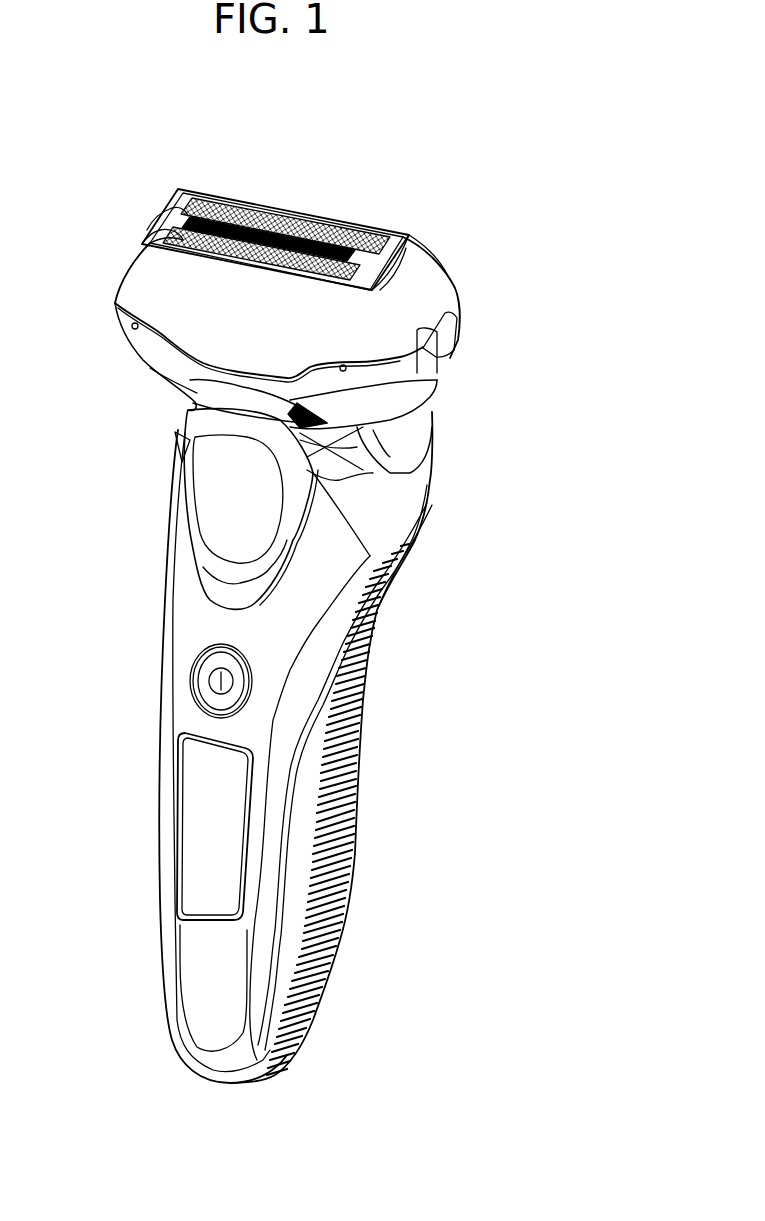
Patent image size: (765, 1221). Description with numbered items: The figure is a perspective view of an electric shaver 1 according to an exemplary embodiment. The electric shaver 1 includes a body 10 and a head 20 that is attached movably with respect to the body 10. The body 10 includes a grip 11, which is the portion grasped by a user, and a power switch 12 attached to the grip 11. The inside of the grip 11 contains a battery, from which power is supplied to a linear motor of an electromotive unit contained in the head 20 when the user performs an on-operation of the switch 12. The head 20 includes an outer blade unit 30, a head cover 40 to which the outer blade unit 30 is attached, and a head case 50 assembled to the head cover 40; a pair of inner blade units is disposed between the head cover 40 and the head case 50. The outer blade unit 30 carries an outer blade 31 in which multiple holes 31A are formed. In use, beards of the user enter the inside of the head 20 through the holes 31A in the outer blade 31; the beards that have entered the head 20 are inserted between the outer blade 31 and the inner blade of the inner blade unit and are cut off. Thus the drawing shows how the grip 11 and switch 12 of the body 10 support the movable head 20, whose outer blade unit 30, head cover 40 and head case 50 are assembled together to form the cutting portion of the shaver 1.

The electric shaver 1 is at (522, 212).
The body 10 is at (413, 500).
The grip 11 is at (313, 720).
The power switch 12 is at (197, 675).
The head 20 is at (447, 283).
The outer blade unit 30 is at (347, 227).
The outer blade 31 is at (223, 200).
The holes 31A is at (270, 217).
The head cover 40 is at (418, 255).
The head case 50 is at (407, 373).